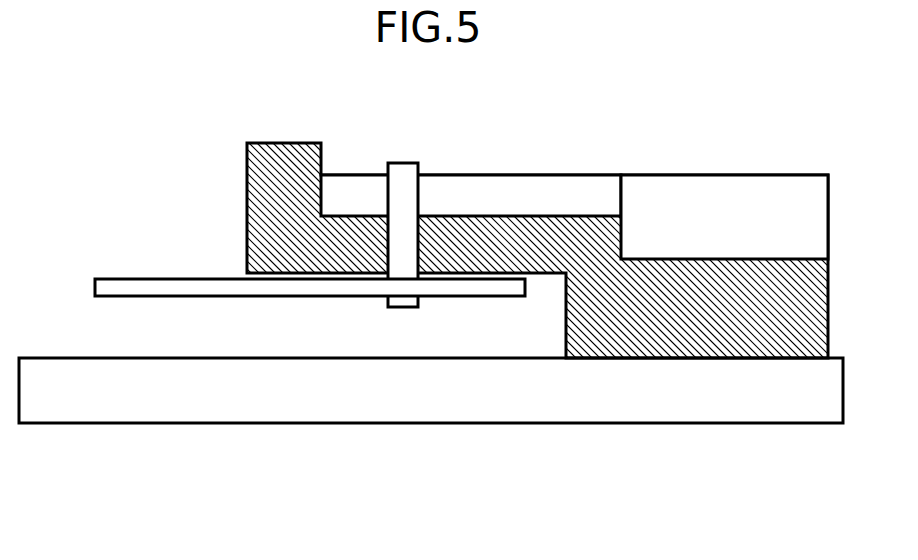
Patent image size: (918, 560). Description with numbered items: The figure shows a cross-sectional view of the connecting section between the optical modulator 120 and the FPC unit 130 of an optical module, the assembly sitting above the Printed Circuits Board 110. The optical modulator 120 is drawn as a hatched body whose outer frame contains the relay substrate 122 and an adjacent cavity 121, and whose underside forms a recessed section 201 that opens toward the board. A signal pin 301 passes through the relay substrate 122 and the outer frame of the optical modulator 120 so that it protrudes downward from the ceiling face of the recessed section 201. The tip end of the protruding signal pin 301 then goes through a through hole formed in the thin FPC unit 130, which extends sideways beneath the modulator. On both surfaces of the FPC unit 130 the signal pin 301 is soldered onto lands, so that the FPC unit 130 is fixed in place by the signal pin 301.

The Printed Circuits Board 110 is at (697, 423).
The optical modulator 120 is at (247, 160).
The first recess 121 is at (781, 175).
The relay substrate 122 is at (580, 175).
The Flexible Printed Circuits unit 130 is at (130, 279).
The signal pin 301 is at (397, 163).
The recessed section 201 is at (274, 329).